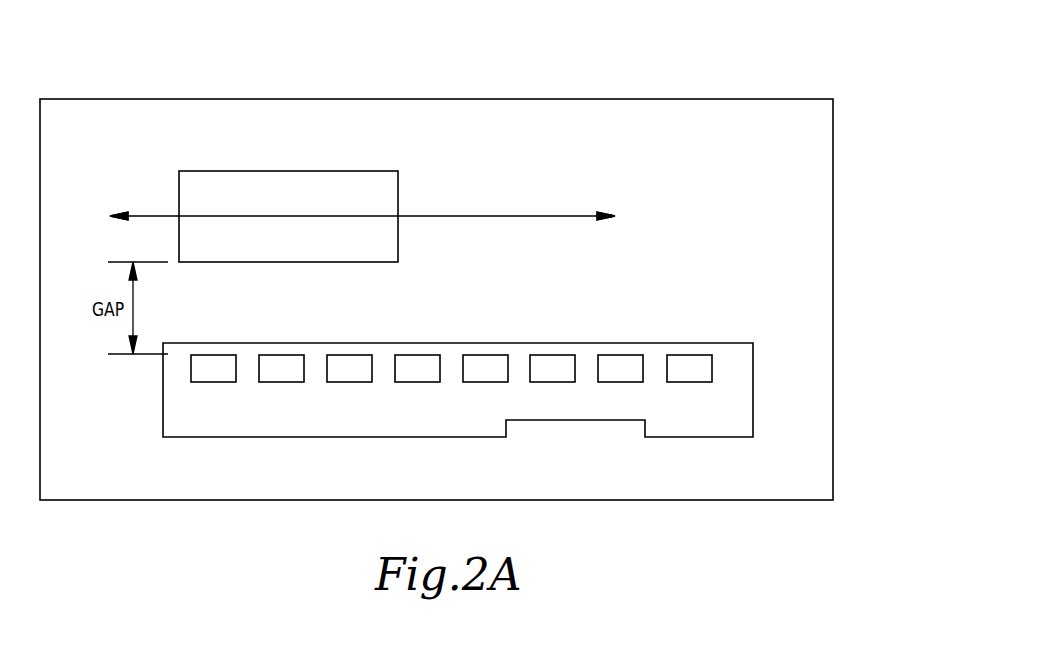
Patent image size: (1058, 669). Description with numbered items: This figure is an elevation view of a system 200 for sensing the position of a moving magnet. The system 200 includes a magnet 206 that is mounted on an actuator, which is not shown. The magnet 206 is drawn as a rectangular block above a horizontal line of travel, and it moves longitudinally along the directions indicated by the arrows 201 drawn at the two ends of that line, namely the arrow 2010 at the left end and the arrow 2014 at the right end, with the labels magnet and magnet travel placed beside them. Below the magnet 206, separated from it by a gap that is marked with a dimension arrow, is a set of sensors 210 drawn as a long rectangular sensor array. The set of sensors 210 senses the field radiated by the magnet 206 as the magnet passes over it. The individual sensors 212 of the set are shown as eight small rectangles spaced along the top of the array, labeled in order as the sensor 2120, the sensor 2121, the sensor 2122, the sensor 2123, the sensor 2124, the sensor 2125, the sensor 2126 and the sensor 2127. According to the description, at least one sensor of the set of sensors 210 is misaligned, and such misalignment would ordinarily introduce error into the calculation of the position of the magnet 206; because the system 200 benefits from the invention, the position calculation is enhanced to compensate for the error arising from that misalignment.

The system 200 is at (752, 62).
The arrows indicating directions of magnet movement 201 is at (409, 194).
The arrow indicating direction of magnet travel 2010 is at (127, 213).
The arrow indicating direction of magnet travel 2014 is at (572, 215).
The magnet 206 is at (312, 171).
The set of sensors 210 is at (195, 437).
The sensors 212 is at (465, 338).
The sensor 2120 is at (205, 353).
The sensor 2121 is at (273, 353).
The sensor 2122 is at (341, 353).
The sensor 2123 is at (409, 353).
The sensor 2124 is at (477, 353).
The sensor 2125 is at (545, 353).
The sensor 2126 is at (613, 353).
The sensor 2127 is at (681, 353).